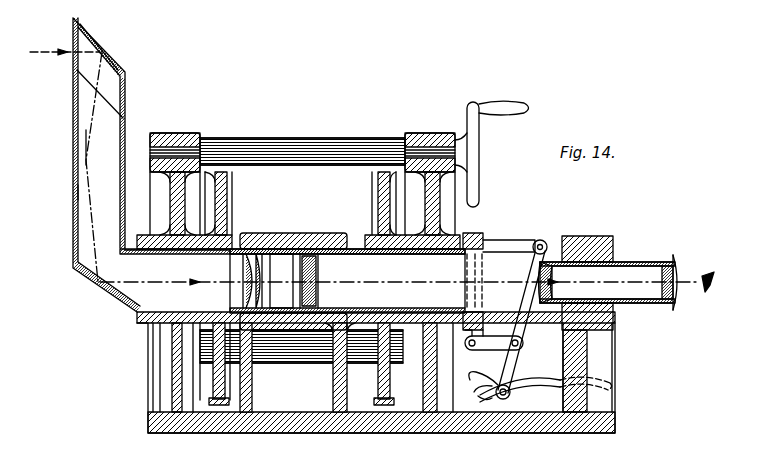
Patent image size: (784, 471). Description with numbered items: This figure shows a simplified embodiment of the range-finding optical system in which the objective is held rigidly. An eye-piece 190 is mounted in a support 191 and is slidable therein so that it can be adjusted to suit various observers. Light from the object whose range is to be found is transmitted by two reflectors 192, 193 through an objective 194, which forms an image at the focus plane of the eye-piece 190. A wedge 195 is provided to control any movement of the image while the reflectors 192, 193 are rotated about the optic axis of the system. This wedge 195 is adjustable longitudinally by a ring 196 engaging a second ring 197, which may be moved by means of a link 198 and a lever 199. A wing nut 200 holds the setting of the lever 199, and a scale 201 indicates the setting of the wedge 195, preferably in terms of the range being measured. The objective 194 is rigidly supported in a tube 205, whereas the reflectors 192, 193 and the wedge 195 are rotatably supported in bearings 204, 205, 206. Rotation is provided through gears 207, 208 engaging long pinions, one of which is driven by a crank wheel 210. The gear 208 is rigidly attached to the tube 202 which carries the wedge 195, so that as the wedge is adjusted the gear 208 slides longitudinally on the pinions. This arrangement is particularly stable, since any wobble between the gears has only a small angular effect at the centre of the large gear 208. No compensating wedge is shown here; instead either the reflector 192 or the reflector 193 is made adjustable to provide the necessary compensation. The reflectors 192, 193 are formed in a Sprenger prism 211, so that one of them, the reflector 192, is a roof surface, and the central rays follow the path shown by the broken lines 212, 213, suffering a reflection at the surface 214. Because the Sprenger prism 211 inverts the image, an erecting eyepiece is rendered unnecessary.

The eye-piece 190 is at (680, 272).
The support 191 is at (590, 237).
The reflector 192 is at (102, 52).
The reflector 193 is at (103, 292).
The objective 194 is at (252, 244).
The wedge 195 is at (314, 244).
The ring 196 is at (486, 248).
The ring 197 is at (484, 243).
The link 198 is at (493, 338).
The lever 199 is at (514, 332).
The wing nut 200 is at (494, 398).
The scale 201 is at (544, 392).
The tube 202 is at (418, 253).
The bearing 204 is at (360, 372).
The tube / bearing 205 is at (286, 240).
The bearing 206 is at (452, 238).
The gear 207 is at (227, 200).
The gear 208 is at (378, 206).
The crank wheel 210 is at (472, 102).
The Sprenger prism 211 is at (108, 132).
The broken line 212 is at (58, 58).
The broken line 213 is at (86, 134).
The surface 214 is at (77, 190).